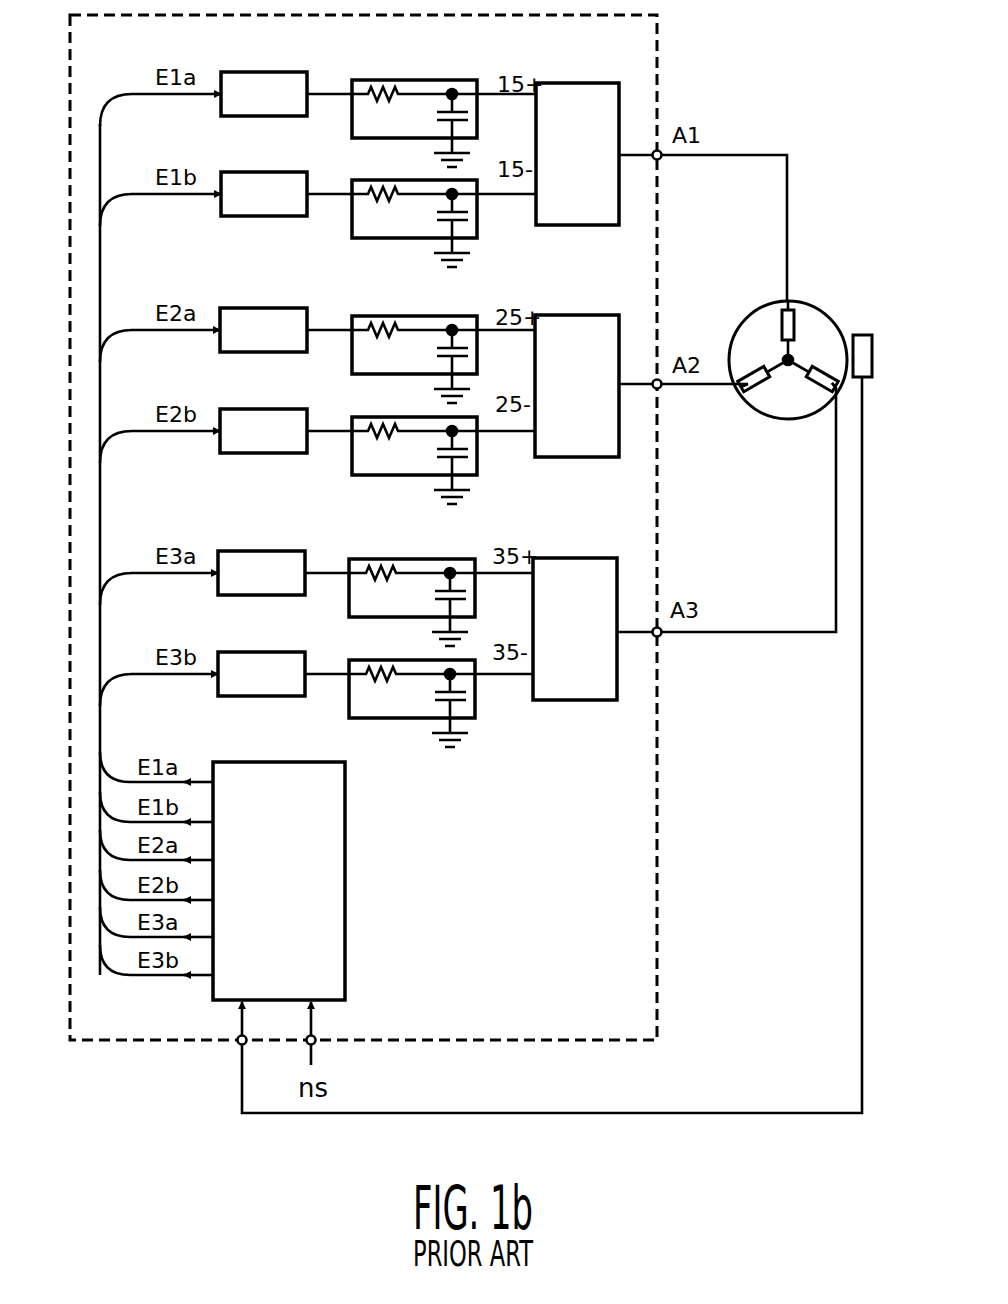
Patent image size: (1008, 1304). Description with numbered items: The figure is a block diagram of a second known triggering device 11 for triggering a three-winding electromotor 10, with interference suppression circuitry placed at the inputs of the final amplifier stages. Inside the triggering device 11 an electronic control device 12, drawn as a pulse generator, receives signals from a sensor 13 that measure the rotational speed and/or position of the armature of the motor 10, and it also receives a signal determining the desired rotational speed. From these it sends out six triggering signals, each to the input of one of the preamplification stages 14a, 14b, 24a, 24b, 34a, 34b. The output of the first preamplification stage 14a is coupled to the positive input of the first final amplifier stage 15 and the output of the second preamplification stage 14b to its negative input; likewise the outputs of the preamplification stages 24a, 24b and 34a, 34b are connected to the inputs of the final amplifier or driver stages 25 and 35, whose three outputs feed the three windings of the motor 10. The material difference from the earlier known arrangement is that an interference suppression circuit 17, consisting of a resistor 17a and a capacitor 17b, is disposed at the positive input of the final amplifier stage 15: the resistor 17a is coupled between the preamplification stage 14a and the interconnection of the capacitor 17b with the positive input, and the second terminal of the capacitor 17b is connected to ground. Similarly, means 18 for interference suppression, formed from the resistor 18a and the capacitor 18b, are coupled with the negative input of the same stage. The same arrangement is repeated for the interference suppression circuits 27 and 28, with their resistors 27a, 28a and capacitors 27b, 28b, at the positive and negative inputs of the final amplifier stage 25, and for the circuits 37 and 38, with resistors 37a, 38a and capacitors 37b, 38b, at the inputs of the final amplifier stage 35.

The three-winding electromotor 10 is at (760, 320).
The triggering device 11 is at (657, 905).
The electronic control device 12 is at (345, 902).
The sensor 13 is at (864, 335).
The first preamplification stage 14a is at (282, 72).
The second preamplification stage 14b is at (282, 216).
The first final amplifier stage 15 is at (573, 225).
The interference suppression circuit 17 is at (414, 101).
The resistor 17a is at (380, 92).
The capacitor 17b is at (450, 110).
The means for interference suppression 18 is at (397, 207).
The resistor 18a is at (370, 194).
The capacitor 18b is at (440, 212).
The preamplification stage 24a is at (278, 308).
The preamplification stage 24b is at (278, 453).
The final amplifier stage 25 is at (573, 457).
The interference suppression circuit 27 is at (414, 348).
The resistor 27a is at (372, 331).
The capacitor 27b is at (457, 350).
The interference suppression circuit 28 is at (399, 466).
The resistor 28a is at (356, 432).
The capacitor 28b is at (437, 460).
The preamplification stage 34a is at (278, 551).
The preamplification stage 34b is at (268, 696).
The final amplifier stage 35 is at (573, 700).
The interference suppression circuit 37 is at (410, 592).
The resistor 37a is at (370, 574).
The capacitor 37b is at (455, 592).
The interference suppression circuit 38 is at (400, 710).
The resistor 38a is at (356, 676).
The capacitor 38b is at (437, 705).